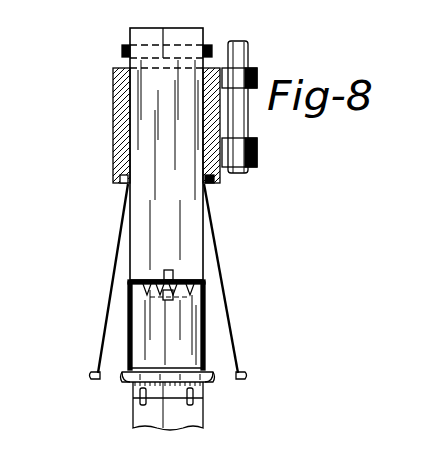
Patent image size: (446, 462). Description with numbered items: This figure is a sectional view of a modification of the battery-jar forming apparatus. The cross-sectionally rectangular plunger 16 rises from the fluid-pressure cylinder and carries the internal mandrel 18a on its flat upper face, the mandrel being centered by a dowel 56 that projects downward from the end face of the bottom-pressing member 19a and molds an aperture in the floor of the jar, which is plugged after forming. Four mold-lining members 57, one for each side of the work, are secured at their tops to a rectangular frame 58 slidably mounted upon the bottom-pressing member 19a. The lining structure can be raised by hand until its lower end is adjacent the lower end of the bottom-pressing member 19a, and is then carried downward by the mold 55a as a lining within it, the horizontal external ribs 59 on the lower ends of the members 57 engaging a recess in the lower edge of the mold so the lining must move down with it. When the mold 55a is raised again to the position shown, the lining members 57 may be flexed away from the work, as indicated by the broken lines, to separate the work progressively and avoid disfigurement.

The piston-rod or plunger 16 is at (180, 415).
The internal mandrel 18a is at (180, 323).
The bottom-pressing member 19a is at (178, 210).
The mold 55a is at (113, 118).
The dowel 56 is at (200, 289).
The mold-lining members 57 is at (130, 273).
The rectangular frame 58 is at (212, 50).
The horizontal external ribs 59 is at (92, 375).